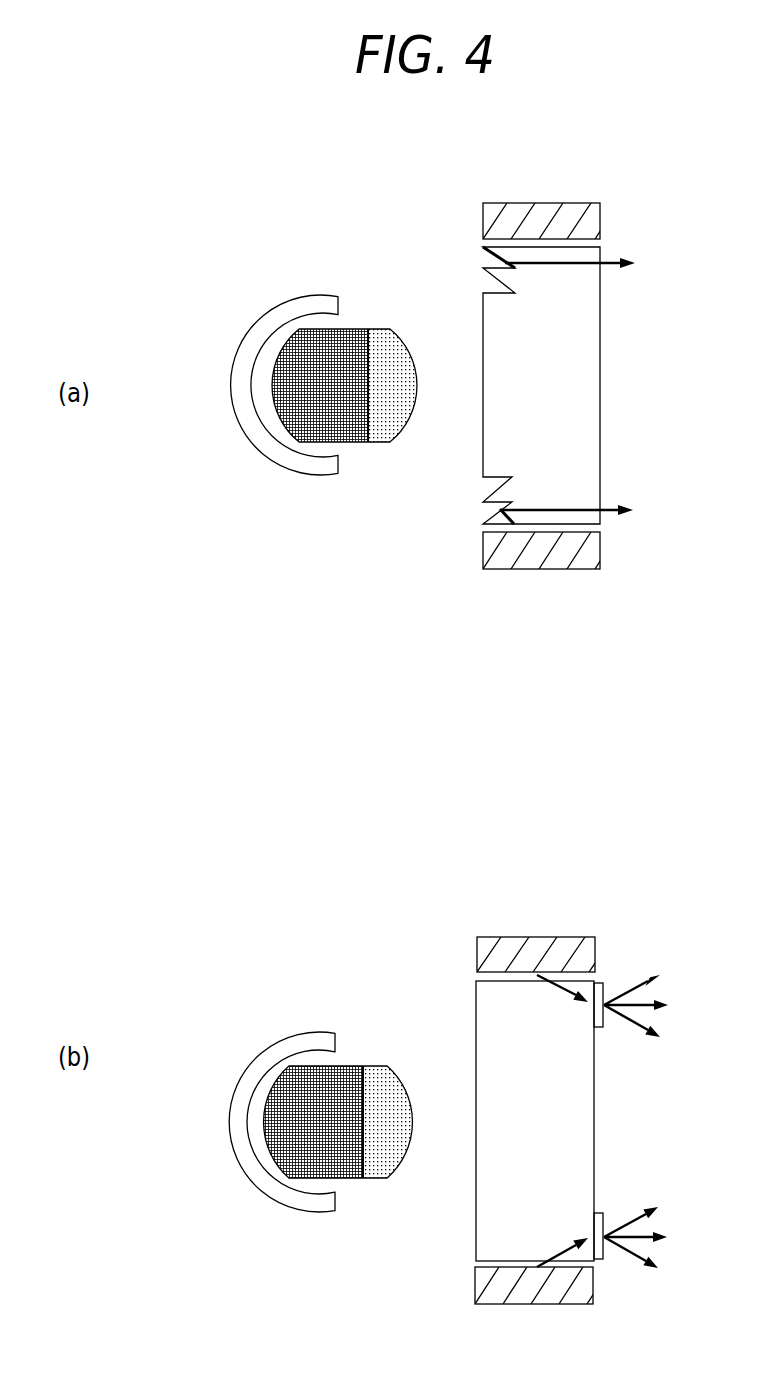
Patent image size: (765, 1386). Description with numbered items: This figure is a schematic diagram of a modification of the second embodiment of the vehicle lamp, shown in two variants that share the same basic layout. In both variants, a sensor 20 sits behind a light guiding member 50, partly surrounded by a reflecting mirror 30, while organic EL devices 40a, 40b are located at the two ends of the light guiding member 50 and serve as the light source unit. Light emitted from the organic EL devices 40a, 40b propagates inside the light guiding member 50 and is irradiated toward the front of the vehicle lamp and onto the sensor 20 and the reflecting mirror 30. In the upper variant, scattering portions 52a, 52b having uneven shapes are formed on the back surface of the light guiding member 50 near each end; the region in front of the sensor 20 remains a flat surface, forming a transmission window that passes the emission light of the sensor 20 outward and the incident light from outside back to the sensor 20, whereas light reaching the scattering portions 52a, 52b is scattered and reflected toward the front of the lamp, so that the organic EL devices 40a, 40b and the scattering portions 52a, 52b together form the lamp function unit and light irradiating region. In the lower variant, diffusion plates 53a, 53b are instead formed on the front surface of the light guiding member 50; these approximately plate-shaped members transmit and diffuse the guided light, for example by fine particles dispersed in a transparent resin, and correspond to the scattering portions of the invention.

The sensor 20 is at (371, 330).
The reflecting mirror 30 is at (308, 306).
The organic EL device 40a is at (590, 545).
The organic EL device 40b is at (585, 220).
The light guiding member 50 is at (598, 328).
The scattering portion 52a is at (485, 503).
The scattering portion 52b is at (484, 265).
The diffusion plate 53a is at (600, 1257).
The diffusion plate 53b is at (602, 1000).